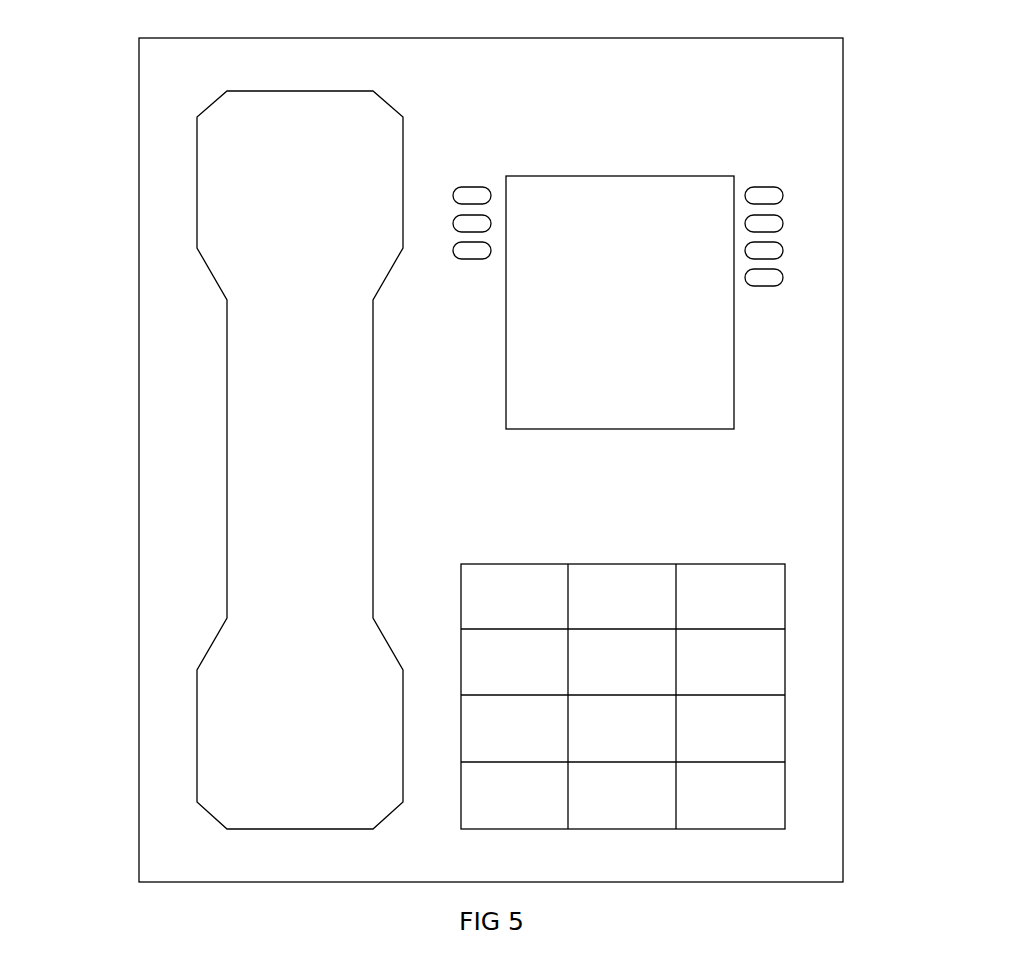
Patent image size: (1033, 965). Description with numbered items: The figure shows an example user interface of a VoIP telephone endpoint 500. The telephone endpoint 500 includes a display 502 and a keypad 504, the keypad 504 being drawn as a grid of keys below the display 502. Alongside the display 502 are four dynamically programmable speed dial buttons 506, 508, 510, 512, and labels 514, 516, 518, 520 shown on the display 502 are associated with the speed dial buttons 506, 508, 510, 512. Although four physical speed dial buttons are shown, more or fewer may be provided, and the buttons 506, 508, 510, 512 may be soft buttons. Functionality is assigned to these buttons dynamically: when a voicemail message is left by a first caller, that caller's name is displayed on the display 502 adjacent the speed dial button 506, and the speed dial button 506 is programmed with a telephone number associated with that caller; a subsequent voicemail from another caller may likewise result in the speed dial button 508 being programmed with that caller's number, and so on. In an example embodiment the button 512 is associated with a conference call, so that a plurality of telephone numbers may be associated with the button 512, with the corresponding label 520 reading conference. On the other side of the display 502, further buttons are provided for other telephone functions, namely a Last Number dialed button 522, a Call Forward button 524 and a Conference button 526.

The telephone endpoint 500 is at (138, 133).
The display 502 is at (589, 175).
The keypad 504 is at (725, 567).
The speed dial button 506 is at (785, 195).
The speed dial button 508 is at (785, 223).
The speed dial button 510 is at (785, 250).
The speed dial button 512 is at (785, 277).
The label 514 is at (693, 190).
The label 516 is at (653, 215).
The label 518 is at (652, 248).
The label 520 is at (648, 288).
The Last Number dialed button 522 is at (475, 186).
The Call Forward button 524 is at (453, 224).
The Conference button 526 is at (472, 260).